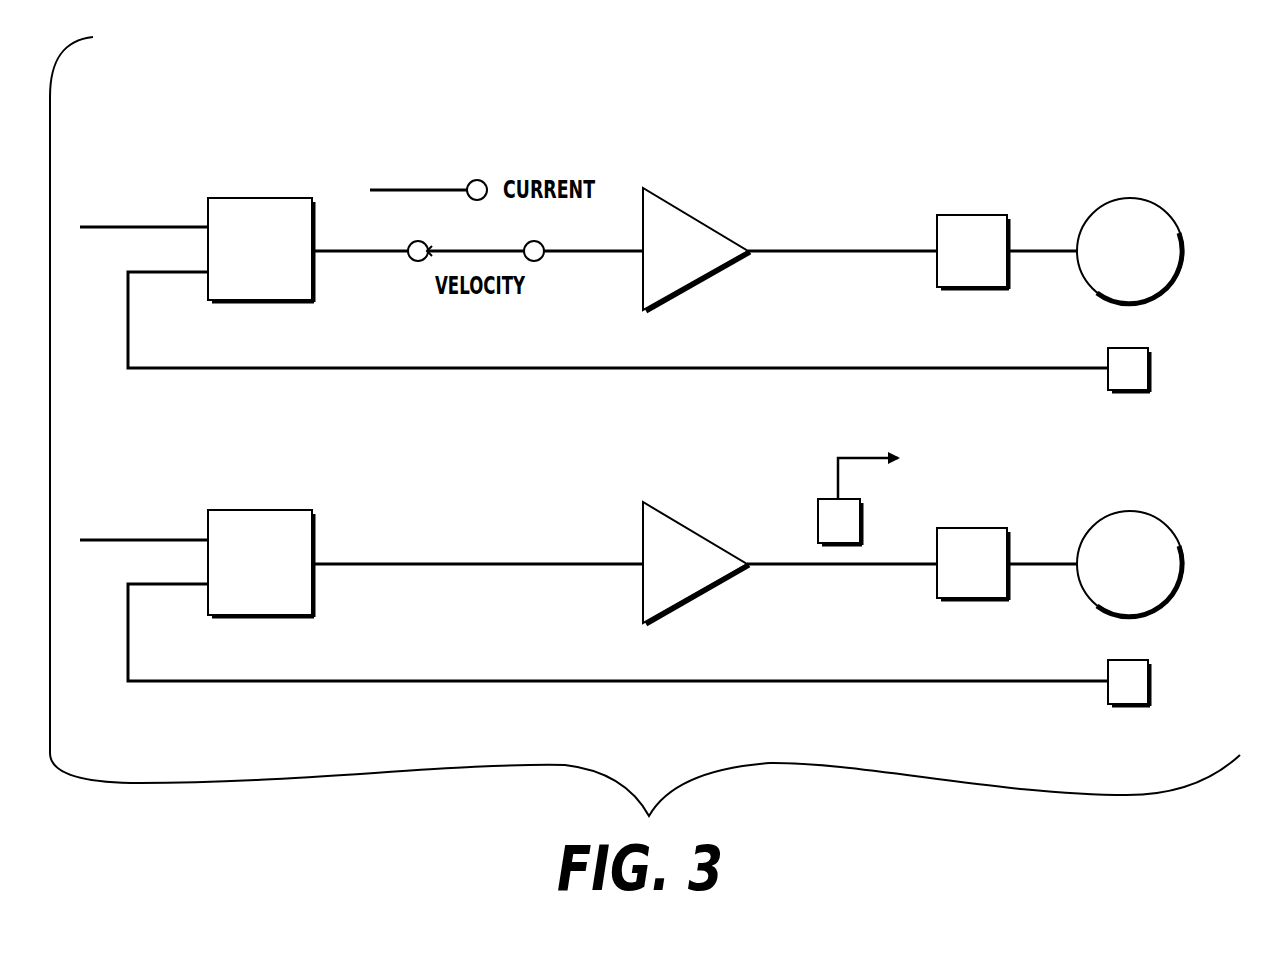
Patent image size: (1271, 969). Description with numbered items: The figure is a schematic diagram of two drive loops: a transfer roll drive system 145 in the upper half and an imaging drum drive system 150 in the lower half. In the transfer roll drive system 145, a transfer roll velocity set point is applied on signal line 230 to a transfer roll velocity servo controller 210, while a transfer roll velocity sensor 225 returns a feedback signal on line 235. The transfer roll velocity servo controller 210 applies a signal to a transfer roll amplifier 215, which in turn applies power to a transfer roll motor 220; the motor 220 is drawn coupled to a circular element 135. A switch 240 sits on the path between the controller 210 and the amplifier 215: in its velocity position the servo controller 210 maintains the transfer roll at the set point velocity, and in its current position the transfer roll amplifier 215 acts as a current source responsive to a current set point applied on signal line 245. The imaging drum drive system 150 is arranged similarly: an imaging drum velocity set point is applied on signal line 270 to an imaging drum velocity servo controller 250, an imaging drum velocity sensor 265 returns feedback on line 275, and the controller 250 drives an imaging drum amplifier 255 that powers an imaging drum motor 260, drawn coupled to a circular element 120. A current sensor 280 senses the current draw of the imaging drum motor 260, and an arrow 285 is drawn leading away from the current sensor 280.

The transfer roll drive system 145 is at (372, 106).
The imaging drum drive system 150 is at (372, 479).
The second motor 120 is at (1160, 518).
The first motor 135 is at (1160, 205).
The transfer roll velocity servo controller 210 is at (243, 198).
The transfer roll amplifier 215 is at (695, 216).
The transfer roll motor 220 is at (962, 215).
The transfer roll velocity sensor 225 is at (1150, 370).
The signal line 230 is at (97, 227).
The line 235 is at (335, 368).
The switch 240 is at (499, 162).
The signal line 245 is at (384, 190).
The imaging drum velocity servo controller 250 is at (243, 510).
The imaging drum amplifier 255 is at (692, 528).
The imaging drum motor 260 is at (962, 528).
The imaging drum velocity sensor 265 is at (1150, 683).
The signal line 270 is at (97, 540).
The line 275 is at (333, 681).
The current sensor 280 is at (862, 522).
The monitor output signal 285 is at (853, 458).